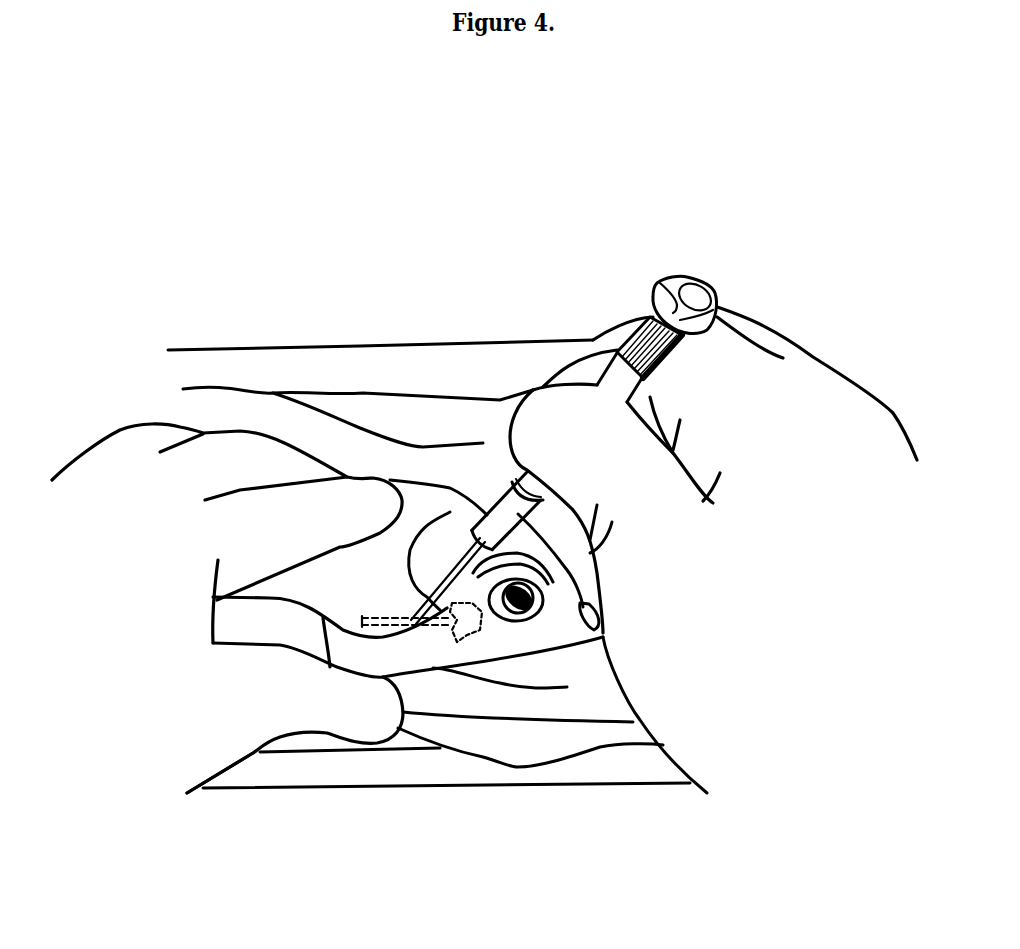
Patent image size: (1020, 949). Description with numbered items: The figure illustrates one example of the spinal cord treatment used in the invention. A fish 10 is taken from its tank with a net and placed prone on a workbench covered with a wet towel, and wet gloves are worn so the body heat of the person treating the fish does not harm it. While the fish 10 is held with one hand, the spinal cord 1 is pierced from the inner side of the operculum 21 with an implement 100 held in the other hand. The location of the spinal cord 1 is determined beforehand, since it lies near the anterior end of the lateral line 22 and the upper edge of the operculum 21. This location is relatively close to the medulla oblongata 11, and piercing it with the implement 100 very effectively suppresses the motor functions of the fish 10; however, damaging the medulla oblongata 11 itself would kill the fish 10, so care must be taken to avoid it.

The spinal cord 1 is at (377, 618).
The fish 10 is at (440, 653).
The medulla oblongata 11 is at (480, 621).
The operculum 21 is at (453, 538).
The lateral line 22 is at (330, 667).
The implement 100 is at (417, 560).